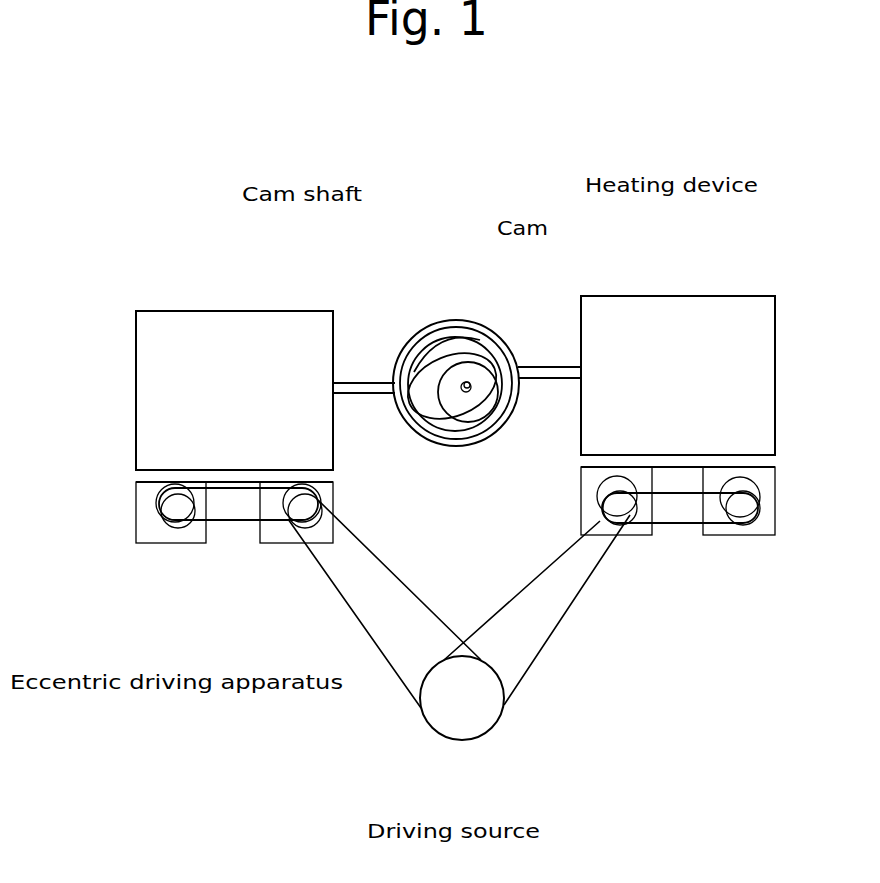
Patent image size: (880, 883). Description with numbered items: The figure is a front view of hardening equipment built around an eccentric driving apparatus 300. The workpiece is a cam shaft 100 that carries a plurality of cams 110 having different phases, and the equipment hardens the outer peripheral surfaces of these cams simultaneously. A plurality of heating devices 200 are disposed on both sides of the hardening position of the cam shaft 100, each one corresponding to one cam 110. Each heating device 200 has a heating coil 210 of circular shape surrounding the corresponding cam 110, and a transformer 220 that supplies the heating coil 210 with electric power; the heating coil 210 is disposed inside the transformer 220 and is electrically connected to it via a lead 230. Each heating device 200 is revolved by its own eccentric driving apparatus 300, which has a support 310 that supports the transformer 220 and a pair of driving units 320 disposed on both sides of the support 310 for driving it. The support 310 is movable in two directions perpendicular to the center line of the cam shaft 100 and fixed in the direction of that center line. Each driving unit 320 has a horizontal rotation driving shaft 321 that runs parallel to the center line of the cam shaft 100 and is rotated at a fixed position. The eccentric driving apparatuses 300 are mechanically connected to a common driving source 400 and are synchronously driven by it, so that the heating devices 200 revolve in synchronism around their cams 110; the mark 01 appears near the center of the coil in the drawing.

The cam shaft 100 is at (426, 356).
The cam 110 is at (478, 326).
The heating device 200 is at (247, 300).
The heating coil 210 is at (452, 321).
The transformer 220 is at (136, 403).
The lead 230 is at (372, 382).
The eccentric driving apparatus 300 is at (451, 587).
The support 310 is at (136, 474).
The driving unit 320 is at (136, 510).
The rotation driving shaft 321 is at (175, 509).
The driving source 400 is at (457, 742).
The rotation axis 01 is at (468, 386).